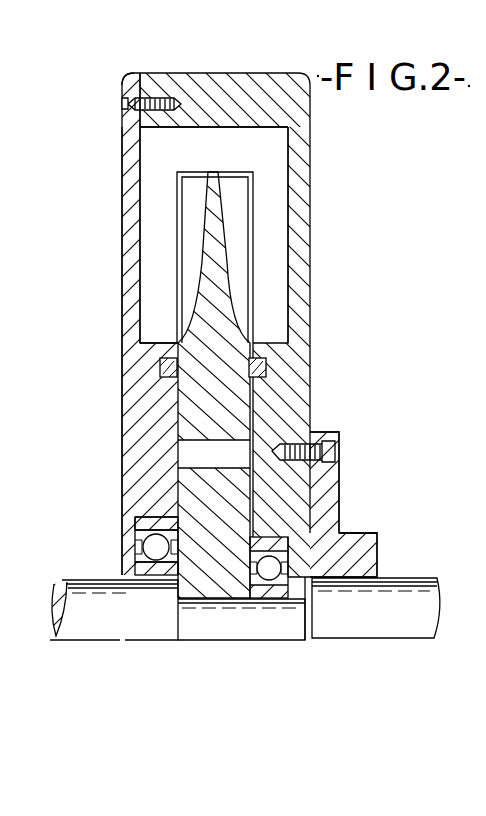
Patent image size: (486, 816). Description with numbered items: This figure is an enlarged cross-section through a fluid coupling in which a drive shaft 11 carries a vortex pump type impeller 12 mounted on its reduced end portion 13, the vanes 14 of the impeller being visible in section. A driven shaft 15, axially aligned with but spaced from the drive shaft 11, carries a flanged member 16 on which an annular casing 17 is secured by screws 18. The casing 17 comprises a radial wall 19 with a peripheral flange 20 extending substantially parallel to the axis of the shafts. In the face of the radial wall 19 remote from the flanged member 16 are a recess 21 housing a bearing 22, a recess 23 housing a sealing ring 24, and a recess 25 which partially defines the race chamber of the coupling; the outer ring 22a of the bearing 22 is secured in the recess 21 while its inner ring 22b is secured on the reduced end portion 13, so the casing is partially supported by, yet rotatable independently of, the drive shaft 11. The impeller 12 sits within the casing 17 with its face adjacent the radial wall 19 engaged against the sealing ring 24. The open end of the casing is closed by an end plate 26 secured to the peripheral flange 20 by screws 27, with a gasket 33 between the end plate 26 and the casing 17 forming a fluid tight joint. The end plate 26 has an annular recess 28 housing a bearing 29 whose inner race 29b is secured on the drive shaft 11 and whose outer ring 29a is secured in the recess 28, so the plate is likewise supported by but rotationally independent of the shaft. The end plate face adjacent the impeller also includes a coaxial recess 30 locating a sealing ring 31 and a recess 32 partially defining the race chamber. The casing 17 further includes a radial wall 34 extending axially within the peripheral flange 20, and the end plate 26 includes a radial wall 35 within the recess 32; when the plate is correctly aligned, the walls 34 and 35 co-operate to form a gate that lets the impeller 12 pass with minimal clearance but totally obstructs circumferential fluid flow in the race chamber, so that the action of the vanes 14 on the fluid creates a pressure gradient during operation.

The drive shaft 11 is at (108, 620).
The vortex pump type impeller 12 is at (187, 405).
The reduced end portion 13 is at (248, 622).
The vanes 14 is at (184, 212).
The driven shaft 15 is at (397, 620).
The flanged member 16 is at (334, 497).
The annular casing 17 is at (313, 306).
The screws 18 is at (287, 452).
The radial wall 19 is at (300, 258).
The peripheral flange 20 is at (247, 88).
The recess 21 is at (327, 521).
The bearing 22 is at (362, 565).
The outer ring 22a is at (370, 535).
The inner ring 22b is at (292, 592).
The recess 23 is at (265, 378).
The sealing ring 24 is at (265, 366).
The recess 25 is at (270, 137).
The end plate 26 is at (134, 146).
The screws 27 is at (163, 98).
The annular recess 28 is at (146, 517).
The bearing 29 is at (135, 540).
The outer ring 29a is at (136, 530).
The inner race 29b is at (132, 565).
The coaxial recess 30 is at (164, 376).
The sealing ring 31 is at (160, 365).
The recess 32 is at (138, 270).
The gasket 33 is at (128, 76).
The radial wall 34 is at (270, 165).
The radial wall 35 is at (150, 184).